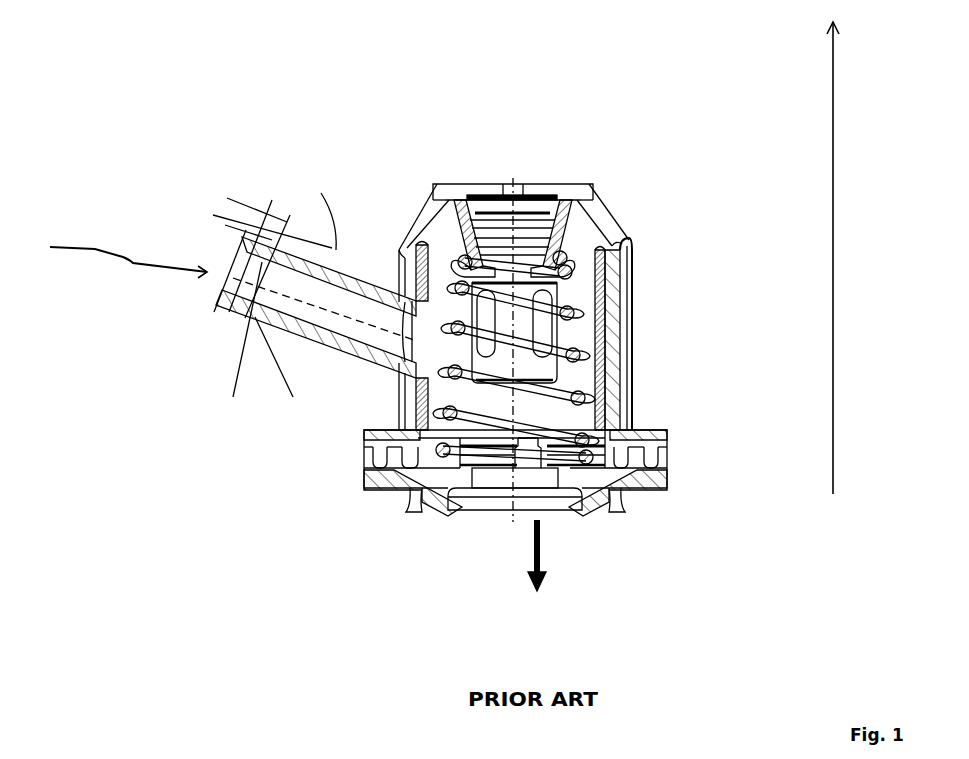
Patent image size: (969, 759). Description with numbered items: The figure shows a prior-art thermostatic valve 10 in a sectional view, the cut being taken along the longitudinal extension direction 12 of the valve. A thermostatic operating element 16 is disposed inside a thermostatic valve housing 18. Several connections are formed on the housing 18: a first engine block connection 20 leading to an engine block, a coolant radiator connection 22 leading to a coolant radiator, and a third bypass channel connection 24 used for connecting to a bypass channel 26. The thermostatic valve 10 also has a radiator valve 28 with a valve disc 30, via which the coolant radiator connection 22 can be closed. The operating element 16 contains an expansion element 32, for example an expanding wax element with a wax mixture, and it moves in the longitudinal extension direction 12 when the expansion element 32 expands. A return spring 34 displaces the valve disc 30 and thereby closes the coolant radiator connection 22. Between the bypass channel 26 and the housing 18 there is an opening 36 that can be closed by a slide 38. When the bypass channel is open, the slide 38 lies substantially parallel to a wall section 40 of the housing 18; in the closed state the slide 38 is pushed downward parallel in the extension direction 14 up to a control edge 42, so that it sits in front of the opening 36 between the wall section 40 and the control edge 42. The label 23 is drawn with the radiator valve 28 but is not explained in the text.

The thermostatic valve 10 is at (600, 145).
The longitudinal extension direction 12 is at (846, 258).
The extension direction 14 is at (538, 573).
The thermostatic operating element 16 is at (570, 336).
The thermostatic valve housing 18 is at (400, 418).
The engine block connection 20 is at (483, 517).
The coolant radiator connection 22 is at (530, 172).
The rim 23 is at (654, 233).
The bypass channel connection 24 is at (127, 241).
The bypass channel 26 is at (356, 321).
The radiator valve 28 is at (640, 210).
The valve disc 30 is at (497, 212).
The expansion element 32 is at (606, 290).
The return spring 34 is at (598, 388).
The opening 36 is at (378, 362).
The slide 38 is at (212, 172).
The wall section 40 is at (396, 246).
The control edge 42 is at (513, 303).